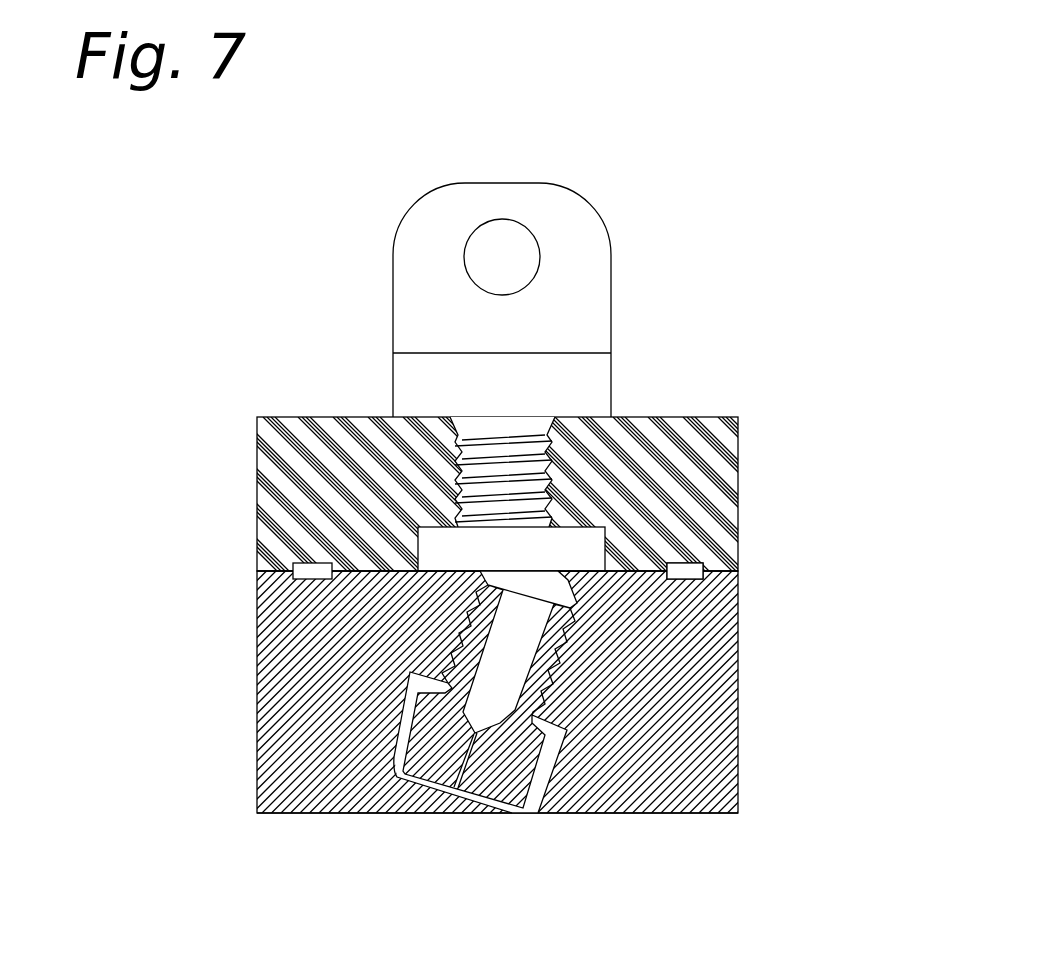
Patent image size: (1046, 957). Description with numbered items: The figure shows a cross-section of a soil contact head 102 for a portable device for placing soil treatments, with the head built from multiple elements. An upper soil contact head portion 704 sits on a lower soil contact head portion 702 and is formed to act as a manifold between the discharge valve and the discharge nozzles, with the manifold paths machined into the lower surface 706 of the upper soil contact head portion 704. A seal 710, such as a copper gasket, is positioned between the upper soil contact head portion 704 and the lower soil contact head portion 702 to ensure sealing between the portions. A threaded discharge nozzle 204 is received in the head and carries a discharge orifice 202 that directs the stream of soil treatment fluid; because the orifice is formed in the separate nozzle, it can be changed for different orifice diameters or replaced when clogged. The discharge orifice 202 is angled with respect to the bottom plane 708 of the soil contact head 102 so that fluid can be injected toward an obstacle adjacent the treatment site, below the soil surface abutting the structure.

The soil contact head 102 is at (730, 455).
The discharge orifice 202 is at (455, 790).
The threaded discharge nozzle 204 is at (512, 805).
The lower soil contact head portion 702 is at (740, 693).
The upper soil contact head portion 704 is at (707, 435).
The lower surface 706 is at (705, 563).
The bottom plane 708 is at (687, 813).
The seal 710 is at (690, 571).